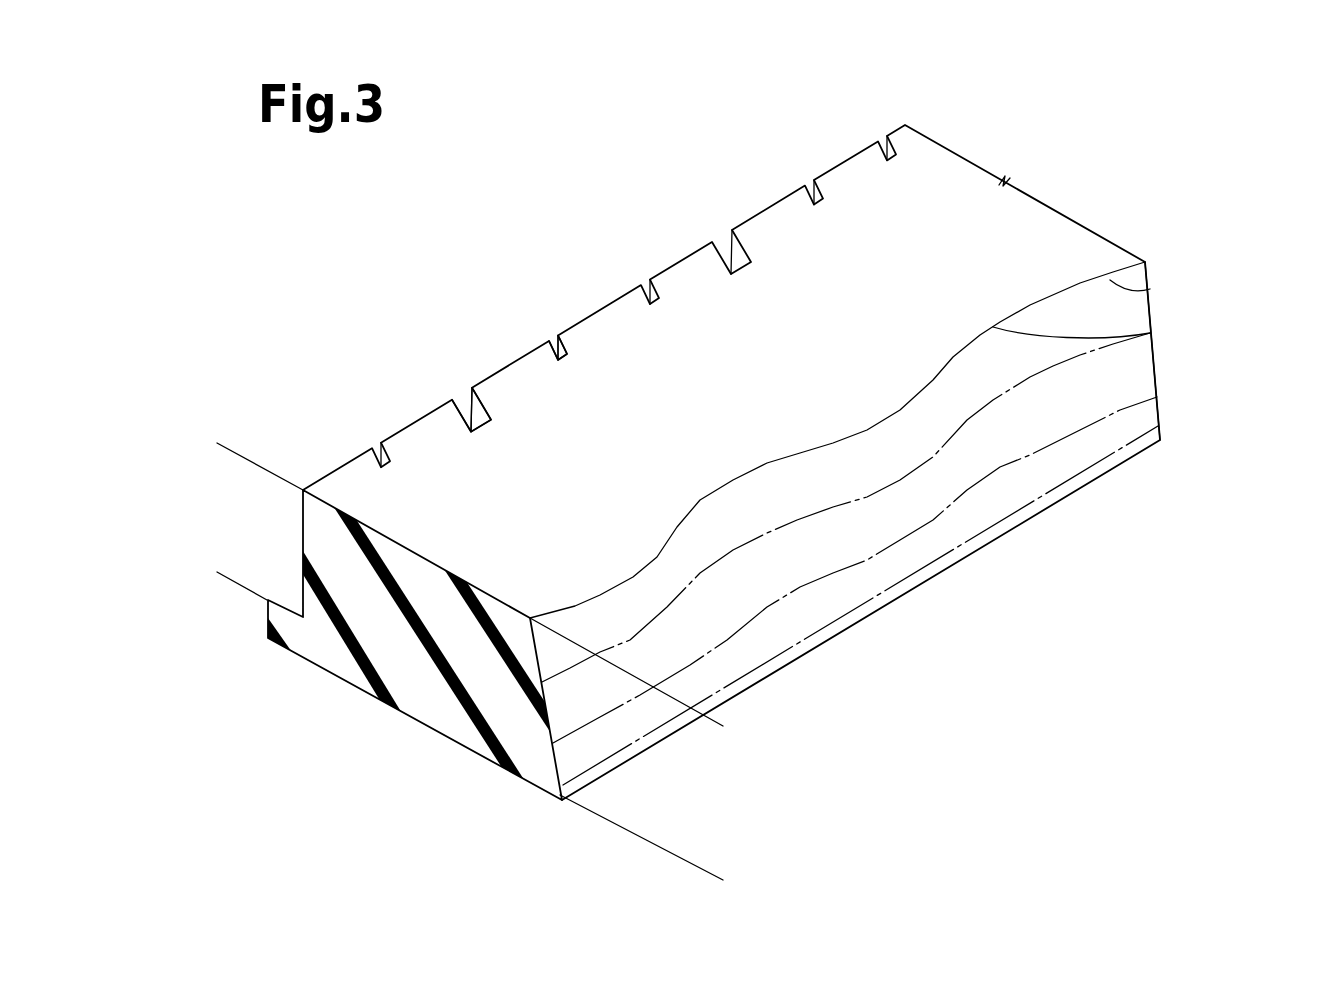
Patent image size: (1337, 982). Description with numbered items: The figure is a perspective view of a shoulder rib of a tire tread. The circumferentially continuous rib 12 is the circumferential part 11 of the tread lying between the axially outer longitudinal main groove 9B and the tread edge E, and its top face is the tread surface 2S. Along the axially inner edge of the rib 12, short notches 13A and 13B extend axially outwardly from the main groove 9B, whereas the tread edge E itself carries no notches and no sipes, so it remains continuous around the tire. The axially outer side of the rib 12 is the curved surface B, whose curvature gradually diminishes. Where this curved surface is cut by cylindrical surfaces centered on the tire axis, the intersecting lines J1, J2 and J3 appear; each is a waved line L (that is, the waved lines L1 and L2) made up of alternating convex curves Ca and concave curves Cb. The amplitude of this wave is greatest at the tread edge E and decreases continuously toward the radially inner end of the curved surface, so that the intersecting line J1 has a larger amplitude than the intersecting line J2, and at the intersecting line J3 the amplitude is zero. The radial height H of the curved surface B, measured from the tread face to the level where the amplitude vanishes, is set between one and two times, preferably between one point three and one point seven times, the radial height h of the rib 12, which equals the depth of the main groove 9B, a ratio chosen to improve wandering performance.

The circumferentially continuous rib 12 is at (674, 433).
The circumferential part 11 is at (674, 433).
The top surface 2S is at (793, 231).
The tread edge E is at (1030, 286).
The short notch 13A is at (471, 399).
The short notch 13B is at (553, 337).
The axially outer longitudinal main groove 9B is at (293, 597).
The convex curve Ca is at (1150, 289).
The concave curve Cb is at (1150, 333).
The waved line L is at (1148, 293).
The intersecting line J1 is at (1052, 366).
The waved line L1 is at (927, 507).
The intersecting line J2 is at (1030, 455).
The waved line L2 is at (933, 570).
The intersecting line J3 is at (1003, 522).
The side face B is at (734, 606).
The radial height of the curved surface H is at (717, 723).
The radial height of the rib h is at (220, 445).